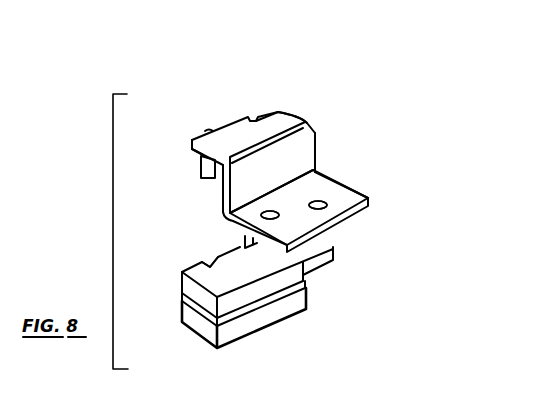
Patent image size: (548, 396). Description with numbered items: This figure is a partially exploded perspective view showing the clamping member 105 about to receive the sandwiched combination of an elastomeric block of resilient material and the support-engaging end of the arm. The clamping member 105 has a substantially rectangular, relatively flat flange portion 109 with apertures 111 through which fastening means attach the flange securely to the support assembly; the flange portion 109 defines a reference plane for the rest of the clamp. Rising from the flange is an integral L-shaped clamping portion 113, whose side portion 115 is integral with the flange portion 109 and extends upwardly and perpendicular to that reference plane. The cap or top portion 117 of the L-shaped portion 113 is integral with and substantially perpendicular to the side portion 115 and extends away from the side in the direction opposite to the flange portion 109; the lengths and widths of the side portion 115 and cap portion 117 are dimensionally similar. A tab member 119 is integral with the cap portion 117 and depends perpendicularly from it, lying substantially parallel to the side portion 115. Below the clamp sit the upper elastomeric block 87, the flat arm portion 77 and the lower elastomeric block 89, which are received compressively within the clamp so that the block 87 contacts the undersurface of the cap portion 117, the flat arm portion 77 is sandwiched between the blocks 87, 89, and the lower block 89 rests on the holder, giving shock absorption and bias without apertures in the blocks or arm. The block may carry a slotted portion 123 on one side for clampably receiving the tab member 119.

The clamping member 105 is at (247, 100).
The cap or top portion 117 is at (287, 120).
The L-shaped clamping portion 113 is at (322, 143).
The tab member 119 is at (200, 169).
The side portion 115 is at (223, 203).
The flange portion 109 is at (353, 195).
The apertures 111 is at (280, 216).
The upper elastomeric block 87 is at (181, 276).
The slotted portion 123 is at (227, 258).
The flat arm portion 77 is at (181, 298).
The lower elastomeric block 89 is at (190, 321).